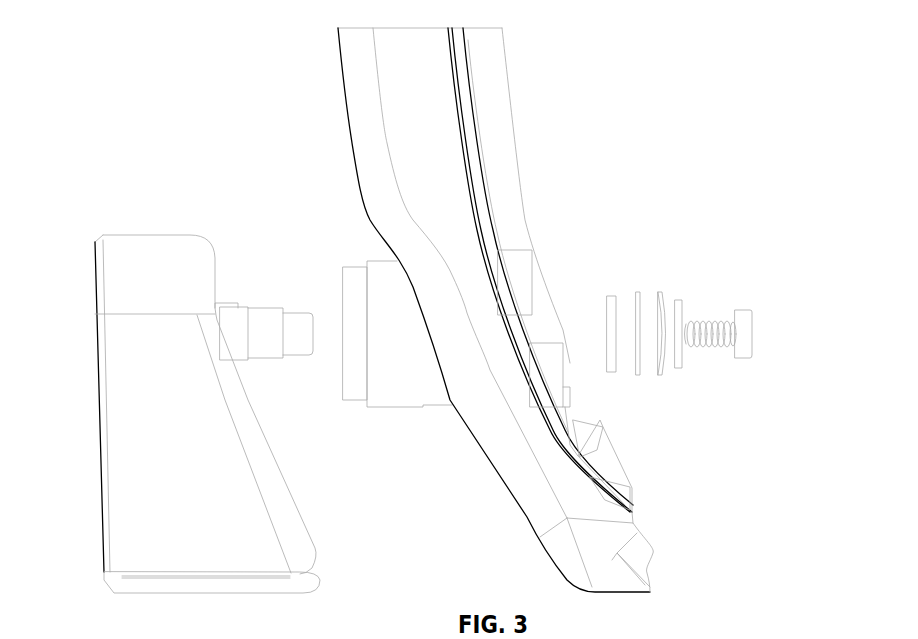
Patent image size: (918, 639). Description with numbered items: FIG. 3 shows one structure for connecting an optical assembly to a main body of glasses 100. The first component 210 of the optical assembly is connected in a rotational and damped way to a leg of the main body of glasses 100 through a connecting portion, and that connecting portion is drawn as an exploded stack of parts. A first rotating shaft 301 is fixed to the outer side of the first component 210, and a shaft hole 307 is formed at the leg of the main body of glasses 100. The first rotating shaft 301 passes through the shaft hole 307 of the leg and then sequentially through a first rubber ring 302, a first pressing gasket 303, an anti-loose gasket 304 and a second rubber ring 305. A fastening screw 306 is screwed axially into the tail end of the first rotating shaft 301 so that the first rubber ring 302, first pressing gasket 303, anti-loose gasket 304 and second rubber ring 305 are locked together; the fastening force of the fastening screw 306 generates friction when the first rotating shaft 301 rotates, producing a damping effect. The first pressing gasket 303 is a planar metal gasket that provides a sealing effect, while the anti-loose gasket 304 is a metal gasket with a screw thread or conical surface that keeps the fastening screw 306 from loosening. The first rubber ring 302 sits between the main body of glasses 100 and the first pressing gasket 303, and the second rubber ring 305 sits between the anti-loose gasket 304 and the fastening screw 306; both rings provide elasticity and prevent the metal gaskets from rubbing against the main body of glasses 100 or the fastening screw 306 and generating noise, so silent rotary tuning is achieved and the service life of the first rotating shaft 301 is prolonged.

The main body of glasses 100 is at (493, 117).
The first component 210 is at (175, 558).
The first rotating shaft 301 is at (256, 276).
The first rubber ring 302 is at (610, 312).
The first pressing gasket 303 is at (640, 372).
The anti-loose gasket 304 is at (662, 373).
The second rubber ring 305 is at (678, 305).
The fastening screw 306 is at (745, 328).
The shaft hole 307 is at (337, 300).